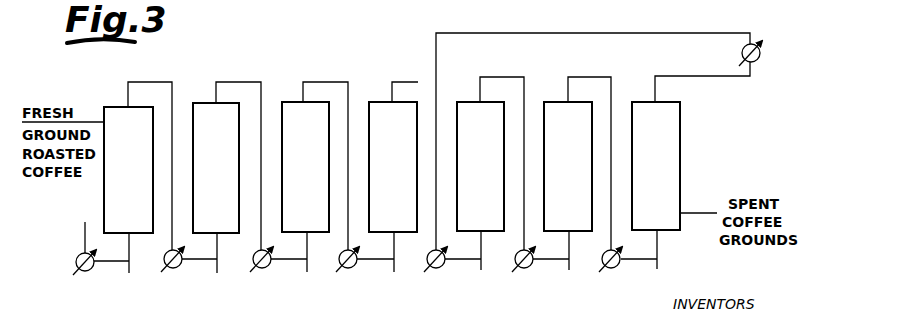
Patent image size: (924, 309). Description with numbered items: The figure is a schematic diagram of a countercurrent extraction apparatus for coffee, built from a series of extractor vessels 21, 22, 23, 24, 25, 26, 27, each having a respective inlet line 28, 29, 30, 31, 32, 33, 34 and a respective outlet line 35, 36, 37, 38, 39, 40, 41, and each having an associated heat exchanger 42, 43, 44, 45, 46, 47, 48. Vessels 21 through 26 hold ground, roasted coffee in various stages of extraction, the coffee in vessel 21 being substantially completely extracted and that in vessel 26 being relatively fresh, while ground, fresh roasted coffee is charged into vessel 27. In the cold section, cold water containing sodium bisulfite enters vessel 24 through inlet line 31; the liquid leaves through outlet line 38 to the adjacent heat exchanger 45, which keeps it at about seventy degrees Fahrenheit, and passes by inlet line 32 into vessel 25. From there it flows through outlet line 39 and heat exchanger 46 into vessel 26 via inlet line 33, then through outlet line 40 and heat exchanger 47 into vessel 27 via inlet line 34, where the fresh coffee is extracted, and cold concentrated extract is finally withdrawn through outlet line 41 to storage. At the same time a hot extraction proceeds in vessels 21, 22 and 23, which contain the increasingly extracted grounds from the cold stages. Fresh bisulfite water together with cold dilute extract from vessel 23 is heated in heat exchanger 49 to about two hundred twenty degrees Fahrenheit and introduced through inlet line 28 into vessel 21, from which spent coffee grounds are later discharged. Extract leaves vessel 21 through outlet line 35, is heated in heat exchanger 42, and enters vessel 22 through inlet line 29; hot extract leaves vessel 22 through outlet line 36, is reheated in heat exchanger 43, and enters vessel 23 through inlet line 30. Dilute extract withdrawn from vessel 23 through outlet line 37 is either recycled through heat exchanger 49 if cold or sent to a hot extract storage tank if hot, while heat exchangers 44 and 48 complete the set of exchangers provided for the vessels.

The extractor vessel 21 is at (665, 180).
The extractor vessel 22 is at (577, 180).
The extractor vessel 23 is at (490, 180).
The extractor vessel 24 is at (402, 180).
The extractor vessel 25 is at (314, 183).
The extractor vessel 26 is at (225, 185).
The extractor vessel 27 is at (137, 185).
The inlet line 28 is at (656, 75).
The inlet line 29 is at (569, 76).
The inlet line 30 is at (481, 76).
The inlet line 31 is at (418, 81).
The inlet line 32 is at (304, 81).
The inlet line 33 is at (217, 81).
The inlet line 34 is at (129, 81).
The outlet line 35 is at (659, 240).
The outlet line 36 is at (571, 241).
The outlet line 37 is at (483, 241).
The outlet line 38 is at (396, 242).
The outlet line 39 is at (309, 242).
The outlet line 40 is at (219, 242).
The outlet line 41 is at (131, 242).
The heat exchanger 42 is at (614, 268).
The heat exchanger 43 is at (527, 268).
The heat exchanger 44 is at (439, 268).
The heat exchanger 45 is at (351, 268).
The heat exchanger 46 is at (265, 268).
The heat exchanger 47 is at (176, 268).
The heat exchanger 48 is at (88, 271).
The heat exchanger 49 is at (757, 59).